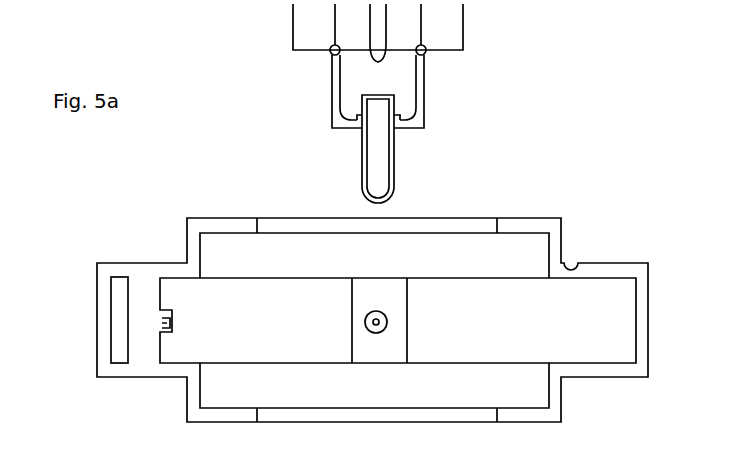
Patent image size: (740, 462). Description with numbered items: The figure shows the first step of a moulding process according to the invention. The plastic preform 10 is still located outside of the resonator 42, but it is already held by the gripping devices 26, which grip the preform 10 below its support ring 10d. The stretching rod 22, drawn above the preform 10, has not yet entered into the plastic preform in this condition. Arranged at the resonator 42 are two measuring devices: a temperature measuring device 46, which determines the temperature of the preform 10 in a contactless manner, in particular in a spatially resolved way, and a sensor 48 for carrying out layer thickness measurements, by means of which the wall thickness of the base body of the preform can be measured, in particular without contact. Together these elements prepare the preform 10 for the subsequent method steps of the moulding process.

The stretching rod 22 is at (377, 42).
The support ring 10d is at (397, 118).
The gripping devices 26 is at (423, 129).
The preform 10 is at (377, 162).
The temperature measuring device 46 is at (119, 292).
The resonator 42 is at (580, 262).
The sensor for carrying out layer thickness measurements 48 is at (385, 324).